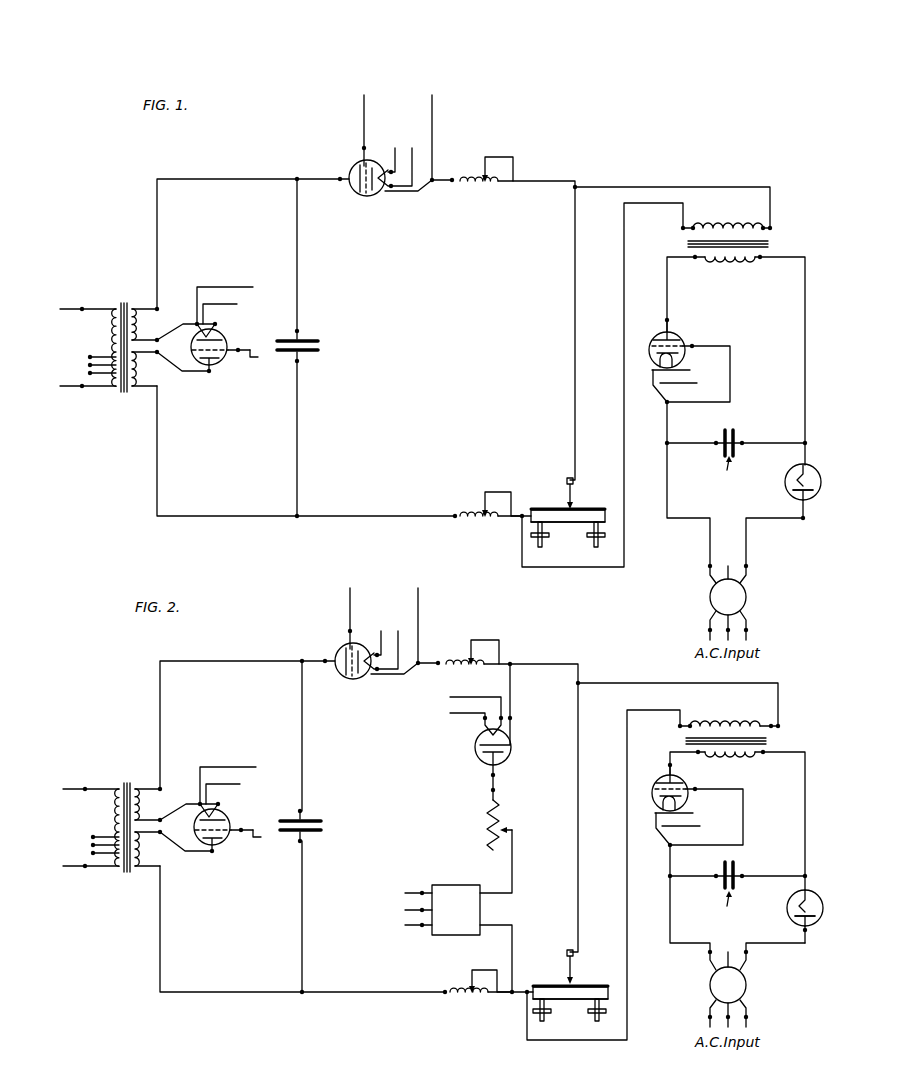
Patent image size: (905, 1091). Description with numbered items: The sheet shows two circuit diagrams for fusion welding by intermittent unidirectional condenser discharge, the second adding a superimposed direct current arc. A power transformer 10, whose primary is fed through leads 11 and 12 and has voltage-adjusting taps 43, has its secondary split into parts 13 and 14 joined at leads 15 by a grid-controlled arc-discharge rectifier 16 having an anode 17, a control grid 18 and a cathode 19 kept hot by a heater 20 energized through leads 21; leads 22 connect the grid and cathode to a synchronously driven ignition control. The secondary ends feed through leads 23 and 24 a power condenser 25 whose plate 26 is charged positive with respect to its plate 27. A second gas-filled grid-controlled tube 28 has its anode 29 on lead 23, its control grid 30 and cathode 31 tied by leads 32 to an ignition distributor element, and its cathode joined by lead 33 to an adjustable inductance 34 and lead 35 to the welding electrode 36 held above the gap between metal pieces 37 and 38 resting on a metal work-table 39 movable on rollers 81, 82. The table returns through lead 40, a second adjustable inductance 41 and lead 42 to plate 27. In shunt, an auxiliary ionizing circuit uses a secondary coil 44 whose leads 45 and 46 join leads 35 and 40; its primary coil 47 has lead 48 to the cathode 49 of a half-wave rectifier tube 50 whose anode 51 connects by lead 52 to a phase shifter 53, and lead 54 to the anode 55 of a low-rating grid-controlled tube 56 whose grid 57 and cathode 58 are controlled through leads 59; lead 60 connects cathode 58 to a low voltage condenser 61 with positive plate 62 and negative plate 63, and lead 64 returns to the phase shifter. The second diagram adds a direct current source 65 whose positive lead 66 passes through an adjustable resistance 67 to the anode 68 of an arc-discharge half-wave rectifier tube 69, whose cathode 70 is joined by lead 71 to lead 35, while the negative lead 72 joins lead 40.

In FIG. 1, the power transformer 10 is at (107, 332).
In FIG. 2, the power transformer 10 is at (106, 827).
In FIG. 1, the lead 11 is at (81, 309).
In FIG. 2, the lead 11 is at (91, 780).
In FIG. 1, the lead 12 is at (80, 388).
In FIG. 2, the lead 12 is at (89, 876).
In FIG. 1, the secondary part 13 is at (139, 320).
In FIG. 2, the secondary part 13 is at (148, 804).
In FIG. 1, the secondary part 14 is at (139, 370).
In FIG. 2, the secondary part 14 is at (148, 849).
In FIG. 1, the leads 15 is at (177, 327).
In FIG. 2, the leads 15 is at (189, 827).
In FIG. 1, the grid-controlled arc-discharge rectifier 16 is at (191, 347).
In FIG. 2, the grid-controlled arc-discharge rectifier 16 is at (198, 827).
In FIG. 1, the anode 17 is at (212, 369).
In FIG. 2, the anode 17 is at (219, 852).
In FIG. 1, the control grid 18 is at (225, 353).
In FIG. 2, the control grid 18 is at (224, 840).
In FIG. 1, the cathode 19 is at (224, 341).
In FIG. 2, the cathode 19 is at (228, 824).
In FIG. 1, the heater 20 is at (220, 338).
In FIG. 2, the heater 20 is at (229, 811).
In FIG. 1, the leads 21 is at (237, 304).
In FIG. 2, the leads 21 is at (233, 794).
In FIG. 1, the leads 22 is at (256, 281).
In FIG. 2, the leads 22 is at (239, 798).
In FIG. 1, the lead 23 is at (206, 179).
In FIG. 2, the lead 23 is at (203, 661).
In FIG. 1, the lead 24 is at (156, 455).
In FIG. 2, the lead 24 is at (160, 927).
In FIG. 1, the power condenser 25 is at (320, 350).
In FIG. 2, the power condenser 25 is at (318, 830).
In FIG. 1, the plate 26 is at (307, 340).
In FIG. 2, the plate 26 is at (311, 809).
In FIG. 1, the plate 27 is at (307, 365).
In FIG. 2, the plate 27 is at (312, 847).
In FIG. 1, the gas-filled grid-controlled arc-discharge tube 28 is at (351, 170).
In FIG. 2, the gas-filled grid-controlled arc-discharge tube 28 is at (334, 656).
In FIG. 1, the anode 29 is at (355, 193).
In FIG. 2, the anode 29 is at (327, 672).
In FIG. 1, the control grid 30 is at (368, 164).
In FIG. 2, the control grid 30 is at (363, 651).
In FIG. 1, the cathode 31 is at (368, 196).
In FIG. 2, the cathode 31 is at (376, 666).
In FIG. 1, the leads 32 is at (361, 109).
In FIG. 2, the leads 32 is at (380, 625).
In FIG. 1, the lead 33 is at (440, 190).
In FIG. 2, the lead 33 is at (405, 679).
In FIG. 1, the adjustable inductance 34 is at (481, 166).
In FIG. 2, the adjustable inductance 34 is at (470, 645).
In FIG. 1, the lead 35 is at (544, 179).
In FIG. 2, the lead 35 is at (551, 664).
In FIG. 1, the welding electrode 36 is at (567, 482).
In FIG. 2, the welding electrode 36 is at (567, 954).
In FIG. 1, the piece of metal 37 is at (551, 510).
In FIG. 2, the piece of metal 37 is at (550, 986).
In FIG. 1, the piece of metal 38 is at (580, 510).
In FIG. 2, the piece of metal 38 is at (583, 986).
In FIG. 1, the work-table 39 is at (582, 526).
In FIG. 2, the work-table 39 is at (584, 1001).
In FIG. 1, the lead 40 is at (518, 519).
In FIG. 2, the lead 40 is at (508, 999).
In FIG. 1, the adjustable inductance 41 is at (483, 501).
In FIG. 2, the adjustable inductance 41 is at (470, 979).
In FIG. 1, the lead 42 is at (391, 516).
In FIG. 2, the lead 42 is at (378, 993).
In FIG. 1, the taps 43 is at (85, 365).
In FIG. 2, the taps 43 is at (89, 845).
In FIG. 1, the secondary coil 44 is at (718, 228).
In FIG. 2, the secondary coil 44 is at (717, 726).
In FIG. 1, the lead 45 is at (644, 187).
In FIG. 2, the lead 45 is at (648, 690).
In FIG. 1, the lead 46 is at (624, 262).
In FIG. 2, the lead 46 is at (628, 761).
In FIG. 1, the primary coil 47 is at (730, 264).
In FIG. 2, the primary coil 47 is at (732, 757).
In FIG. 1, the lead 48 is at (805, 412).
In FIG. 2, the lead 48 is at (806, 804).
In FIG. 1, the cathode 49 is at (807, 469).
In FIG. 2, the cathode 49 is at (809, 894).
In FIG. 1, the half-wave rectifier tube 50 is at (814, 504).
In FIG. 2, the half-wave rectifier tube 50 is at (815, 931).
In FIG. 1, the anode 51 is at (795, 496).
In FIG. 2, the anode 51 is at (795, 913).
In FIG. 1, the lead 52 is at (785, 520).
In FIG. 2, the lead 52 is at (774, 947).
In FIG. 1, the phase shifter 53 is at (748, 599).
In FIG. 2, the phase shifter 53 is at (748, 987).
In FIG. 1, the lead 54 is at (669, 272).
In FIG. 2, the lead 54 is at (684, 754).
In FIG. 1, the anode 55 is at (661, 329).
In FIG. 2, the anode 55 is at (664, 784).
In FIG. 1, the gas-filled grid-controlled rectifier tube 56 is at (671, 329).
In FIG. 2, the gas-filled grid-controlled rectifier tube 56 is at (678, 782).
In FIG. 1, the grid 57 is at (688, 342).
In FIG. 2, the grid 57 is at (695, 789).
In FIG. 1, the cathode 58 is at (682, 357).
In FIG. 2, the cathode 58 is at (688, 801).
In FIG. 1, the leads 59 is at (730, 355).
In FIG. 2, the leads 59 is at (744, 794).
In FIG. 1, the lead 60 is at (668, 441).
In FIG. 2, the lead 60 is at (672, 878).
In FIG. 1, the low voltage condenser 61 is at (729, 469).
In FIG. 2, the low voltage condenser 61 is at (728, 906).
In FIG. 1, the positive plate 62 is at (735, 429).
In FIG. 2, the positive plate 62 is at (737, 886).
In FIG. 1, the negative plate 63 is at (723, 457).
In FIG. 2, the negative plate 63 is at (722, 887).
In FIG. 1, the lead 64 is at (673, 526).
In FIG. 2, the lead 64 is at (675, 947).
In FIG. 2, the direct current source 65 is at (430, 910).
In FIG. 2, the positive lead 66 is at (512, 895).
In FIG. 2, the adjustable resistance 67 is at (502, 827).
In FIG. 2, the anode 68 is at (499, 764).
In FIG. 2, the half-wave rectifier tube 69 is at (474, 753).
In FIG. 2, the cathode 70 is at (510, 745).
In FIG. 2, the lead 71 is at (511, 695).
In FIG. 2, the negative lead 72 is at (503, 951).
In FIG. 1, the roller 81 is at (538, 538).
In FIG. 2, the roller 81 is at (543, 1024).
In FIG. 1, the roller 82 is at (599, 538).
In FIG. 2, the roller 82 is at (598, 1024).